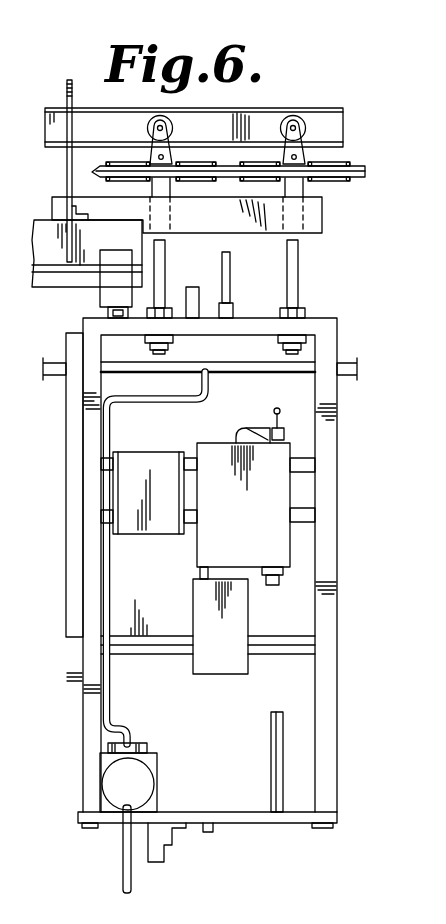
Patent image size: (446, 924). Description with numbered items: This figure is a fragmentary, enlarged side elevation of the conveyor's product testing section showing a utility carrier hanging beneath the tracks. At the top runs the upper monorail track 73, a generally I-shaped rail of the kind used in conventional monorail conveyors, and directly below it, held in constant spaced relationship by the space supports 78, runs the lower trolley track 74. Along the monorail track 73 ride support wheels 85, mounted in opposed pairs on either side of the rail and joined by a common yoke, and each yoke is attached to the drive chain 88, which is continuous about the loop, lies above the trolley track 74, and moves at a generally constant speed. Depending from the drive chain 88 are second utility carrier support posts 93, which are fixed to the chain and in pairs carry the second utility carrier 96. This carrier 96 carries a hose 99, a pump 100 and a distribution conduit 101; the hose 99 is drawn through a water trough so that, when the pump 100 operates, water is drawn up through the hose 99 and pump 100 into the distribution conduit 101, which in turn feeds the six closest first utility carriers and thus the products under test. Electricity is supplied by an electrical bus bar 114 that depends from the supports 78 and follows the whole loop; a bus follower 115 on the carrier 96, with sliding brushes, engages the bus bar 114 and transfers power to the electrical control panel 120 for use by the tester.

The monorail track 73 is at (343, 128).
The trolley track 74 is at (323, 215).
The space supports 78 is at (67, 168).
The support wheels 85 is at (160, 115).
The drive chain 88 is at (357, 171).
The second utility carrier support posts 93 is at (163, 278).
The second utility carrier 96 is at (338, 565).
The hose 99 is at (122, 853).
The pump 100 is at (158, 764).
The distribution conduit 101 is at (268, 368).
The electrical bus bar 114 is at (43, 228).
The bus follower 115 is at (100, 297).
The electrical control panel 120 is at (293, 494).